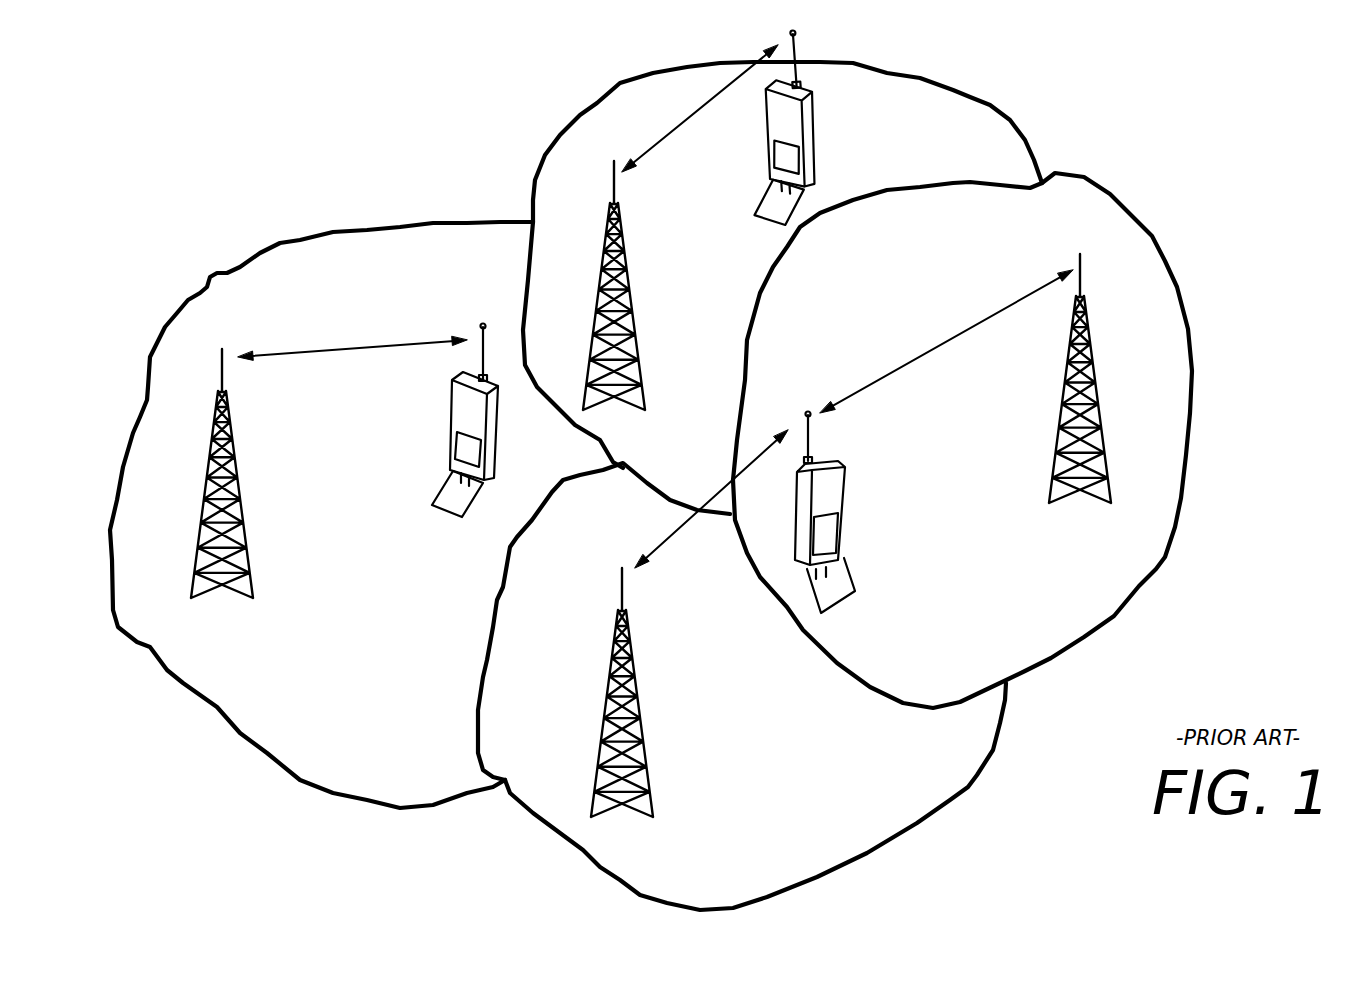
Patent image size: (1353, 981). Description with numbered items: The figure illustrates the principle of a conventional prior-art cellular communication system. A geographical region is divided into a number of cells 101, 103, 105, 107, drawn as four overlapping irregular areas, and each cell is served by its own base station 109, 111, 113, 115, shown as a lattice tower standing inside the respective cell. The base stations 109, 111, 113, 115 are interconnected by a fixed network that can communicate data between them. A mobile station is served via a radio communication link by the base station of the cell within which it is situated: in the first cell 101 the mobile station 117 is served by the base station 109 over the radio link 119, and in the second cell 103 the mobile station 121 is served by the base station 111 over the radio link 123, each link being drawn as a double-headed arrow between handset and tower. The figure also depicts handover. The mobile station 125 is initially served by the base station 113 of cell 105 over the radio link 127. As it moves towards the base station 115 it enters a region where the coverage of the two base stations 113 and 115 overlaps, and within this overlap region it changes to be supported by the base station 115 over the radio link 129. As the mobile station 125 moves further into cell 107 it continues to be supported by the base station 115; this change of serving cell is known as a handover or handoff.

The cell 101 is at (210, 275).
The cell 103 is at (596, 105).
The cell 105 is at (1152, 236).
The cell 107 is at (968, 787).
The base station 109 is at (245, 523).
The base station 111 is at (622, 242).
The base station 113 is at (1063, 392).
The base station 115 is at (641, 722).
The mobile station 117 is at (438, 496).
The radio link 119 is at (350, 349).
The mobile station 121 is at (760, 208).
The radio link 123 is at (728, 75).
The mobile station 125 is at (852, 592).
The radio link 127 is at (1023, 290).
The radio link 129 is at (743, 462).